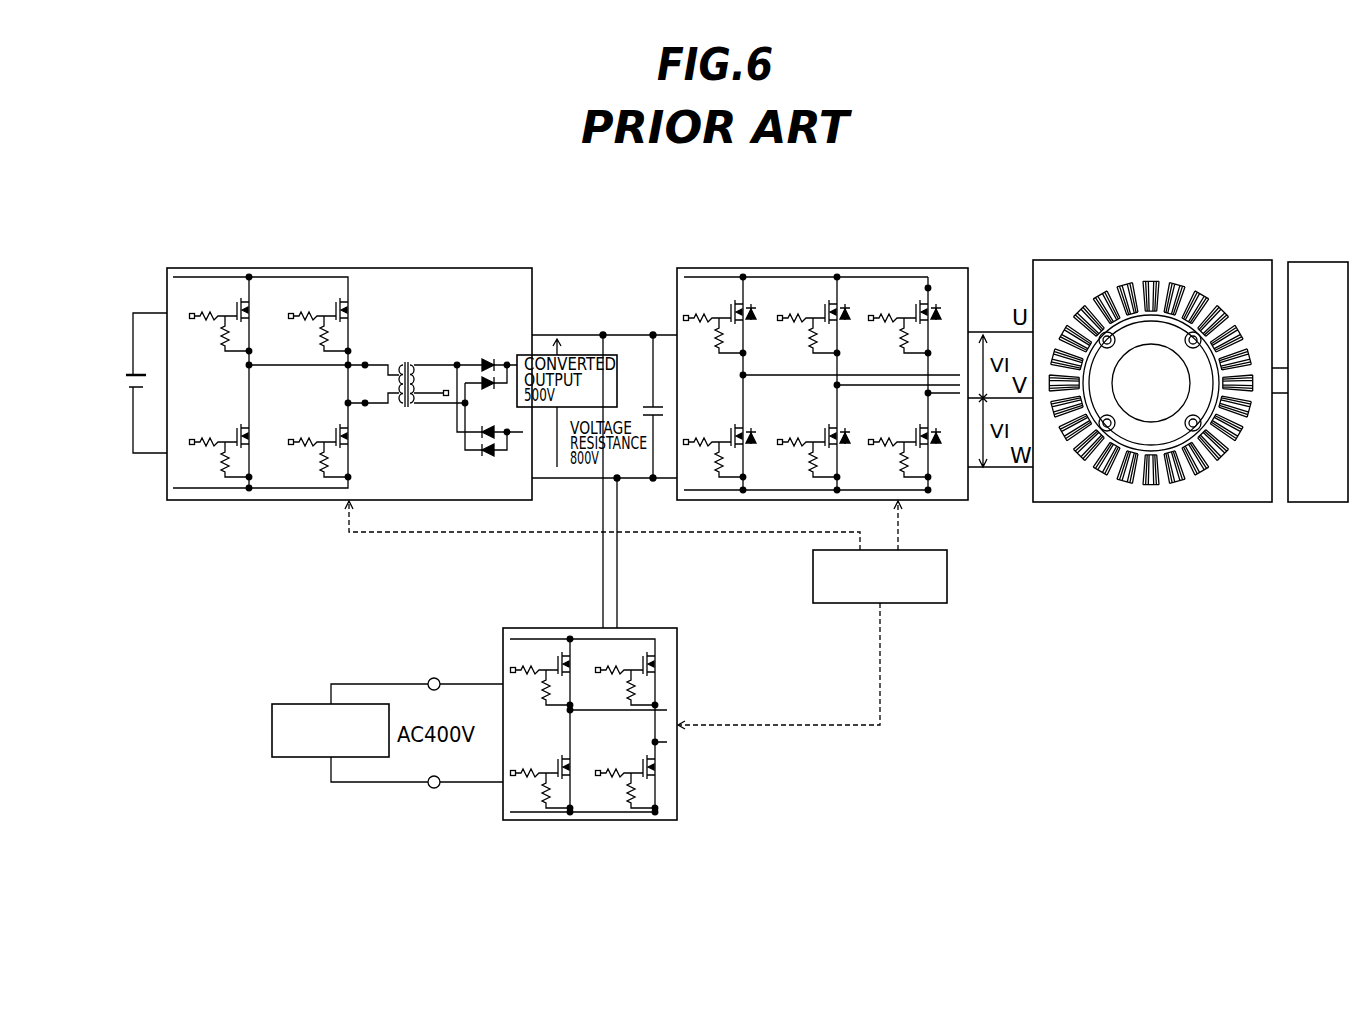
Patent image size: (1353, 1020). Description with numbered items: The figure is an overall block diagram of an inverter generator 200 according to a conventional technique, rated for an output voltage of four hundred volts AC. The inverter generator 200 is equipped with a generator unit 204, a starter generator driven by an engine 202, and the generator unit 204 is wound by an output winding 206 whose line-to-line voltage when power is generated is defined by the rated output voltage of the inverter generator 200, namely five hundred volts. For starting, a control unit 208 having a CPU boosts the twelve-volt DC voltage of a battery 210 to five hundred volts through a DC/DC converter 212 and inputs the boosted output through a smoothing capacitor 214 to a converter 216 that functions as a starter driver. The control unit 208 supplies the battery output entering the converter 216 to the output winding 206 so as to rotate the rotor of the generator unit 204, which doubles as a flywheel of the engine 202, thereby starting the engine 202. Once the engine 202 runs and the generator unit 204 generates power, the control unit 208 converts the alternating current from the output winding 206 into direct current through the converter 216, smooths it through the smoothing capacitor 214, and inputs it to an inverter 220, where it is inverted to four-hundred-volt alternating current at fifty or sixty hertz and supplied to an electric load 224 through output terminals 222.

The inverter generator 200 is at (1031, 234).
The engine 202 is at (1316, 262).
The generator unit 204 is at (1152, 324).
The output winding 206 is at (1156, 298).
The control unit 208 is at (948, 562).
The battery 210 is at (131, 374).
The DC/DC converter 212 is at (428, 268).
The smoothing capacitor 214 is at (657, 345).
The converter 216 is at (887, 268).
The inverter 220 is at (658, 628).
The output terminals 222 is at (434, 678).
The electric load 224 is at (290, 704).